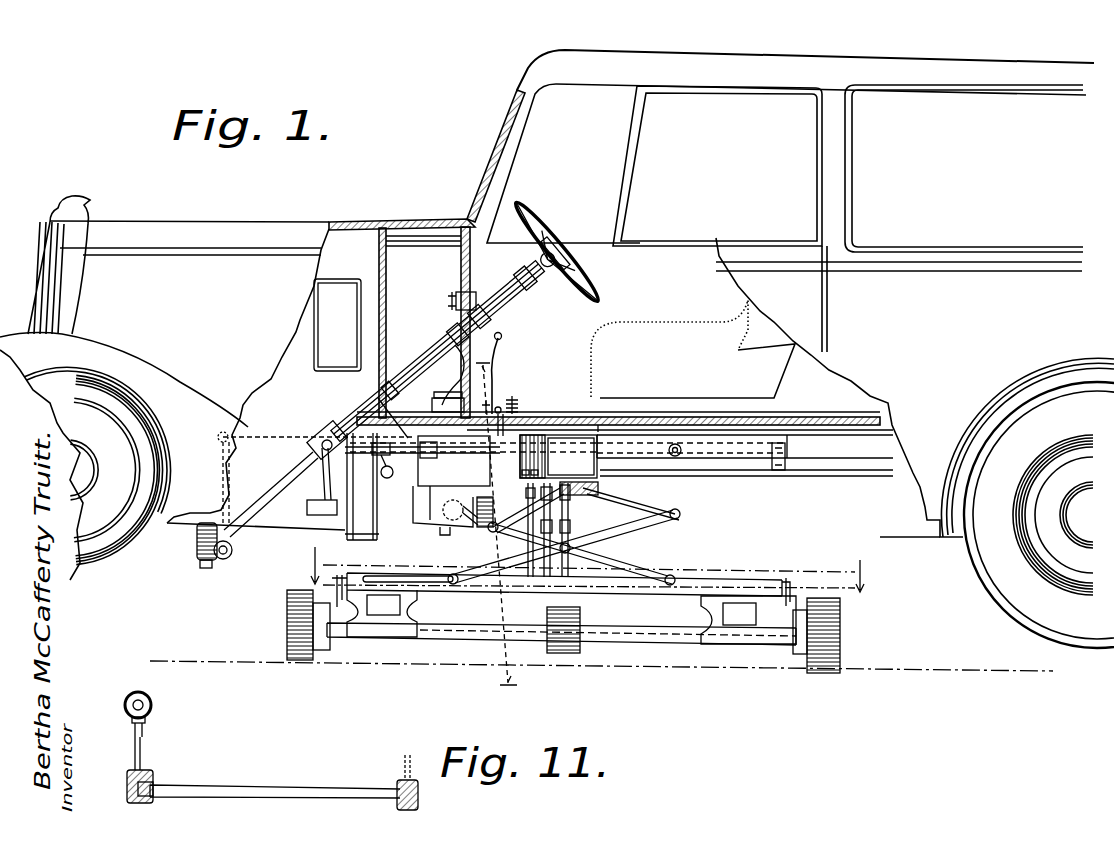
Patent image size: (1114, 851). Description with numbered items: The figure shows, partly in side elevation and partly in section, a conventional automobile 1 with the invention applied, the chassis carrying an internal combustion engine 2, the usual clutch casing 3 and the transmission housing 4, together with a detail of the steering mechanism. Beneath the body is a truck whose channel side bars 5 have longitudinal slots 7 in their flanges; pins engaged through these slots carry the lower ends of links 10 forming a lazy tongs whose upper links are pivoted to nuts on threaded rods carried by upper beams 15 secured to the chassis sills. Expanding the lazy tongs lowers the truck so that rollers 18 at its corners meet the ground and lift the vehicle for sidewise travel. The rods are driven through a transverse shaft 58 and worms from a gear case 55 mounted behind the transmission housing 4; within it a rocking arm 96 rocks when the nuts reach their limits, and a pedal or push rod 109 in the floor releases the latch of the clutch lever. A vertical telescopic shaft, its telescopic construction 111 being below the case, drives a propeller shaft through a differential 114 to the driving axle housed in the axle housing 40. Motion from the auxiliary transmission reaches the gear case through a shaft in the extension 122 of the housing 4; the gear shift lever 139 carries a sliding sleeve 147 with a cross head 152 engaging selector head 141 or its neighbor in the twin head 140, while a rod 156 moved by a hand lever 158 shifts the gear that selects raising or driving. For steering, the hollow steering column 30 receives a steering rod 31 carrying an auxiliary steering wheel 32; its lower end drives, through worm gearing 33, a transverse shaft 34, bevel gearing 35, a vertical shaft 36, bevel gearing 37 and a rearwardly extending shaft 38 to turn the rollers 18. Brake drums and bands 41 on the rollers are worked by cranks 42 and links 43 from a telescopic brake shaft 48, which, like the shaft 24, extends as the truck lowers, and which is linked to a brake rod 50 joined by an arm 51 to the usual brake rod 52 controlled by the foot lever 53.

In FIG. 1, the automobile 1 is at (557, 349).
In FIG. 1, the internal combustion engine 2 is at (278, 392).
In FIG. 1, the clutch casing 3 is at (362, 550).
In FIG. 1, the transmission housing 4 is at (444, 536).
In FIG. 1, the side bars 5 is at (631, 589).
In FIG. 1, the longitudinal slots 7 is at (452, 585).
In FIG. 1, the links 10 is at (495, 575).
In FIG. 1, the upper channel bars or beams 15 is at (712, 443).
In FIG. 1, the rollers 18 is at (300, 661).
In FIG. 1, the shaft 24 is at (528, 518).
In FIG. 1, the steering column 30 is at (452, 326).
In FIG. 1, the steering rod 31 is at (296, 472).
In FIG. 1, the auxiliary steering wheel 32 is at (560, 215).
In FIG. 1, the worm gearing 33 is at (212, 566).
In FIG. 11, the worm gearing 33 is at (417, 785).
In FIG. 11, the transverse shaft 34 is at (276, 786).
In FIG. 11, the bevel gearing 35 is at (153, 780).
In FIG. 1, the vertical shaft 36 is at (220, 505).
In FIG. 11, the vertical shaft 36 is at (142, 750).
In FIG. 1, the bevel gearing 37 is at (217, 438).
In FIG. 11, the bevel gearing 37 is at (125, 706).
In FIG. 1, the rearwardly extending shaft or rod 38 is at (265, 435).
In FIG. 1, the axle housing 40 is at (530, 632).
In FIG. 1, the brake drums and bands 41 is at (327, 650).
In FIG. 1, the short levers or cranks 42 is at (313, 604).
In FIG. 1, the links 43 is at (330, 579).
In FIG. 1, the brake shaft 48 is at (545, 572).
In FIG. 1, the brake rod 50 is at (425, 510).
In FIG. 1, the arm or bracket 51 is at (420, 480).
In FIG. 1, the brake rod 52 is at (470, 452).
In FIG. 1, the foot lever 53 is at (322, 430).
In FIG. 1, the gear case 55 is at (600, 432).
In FIG. 1, the transverse shaft 58 is at (787, 456).
In FIG. 1, the lever or rocking arm 96 is at (559, 465).
In FIG. 1, the pedal or push rod 109 is at (522, 430).
In FIG. 1, the telescopic construction 111 is at (555, 512).
In FIG. 1, the differential 114 is at (585, 652).
In FIG. 1, the extension 122 is at (488, 522).
In FIG. 1, the gear shift lever 139 is at (438, 380).
In FIG. 1, the twin head 140 is at (488, 400).
In FIG. 1, the selector head 141 is at (380, 400).
In FIG. 1, the sleeve 147 is at (456, 300).
In FIG. 1, the cross head 152 is at (447, 350).
In FIG. 1, the rod 156 is at (514, 394).
In FIG. 1, the hand lever 158 is at (502, 338).